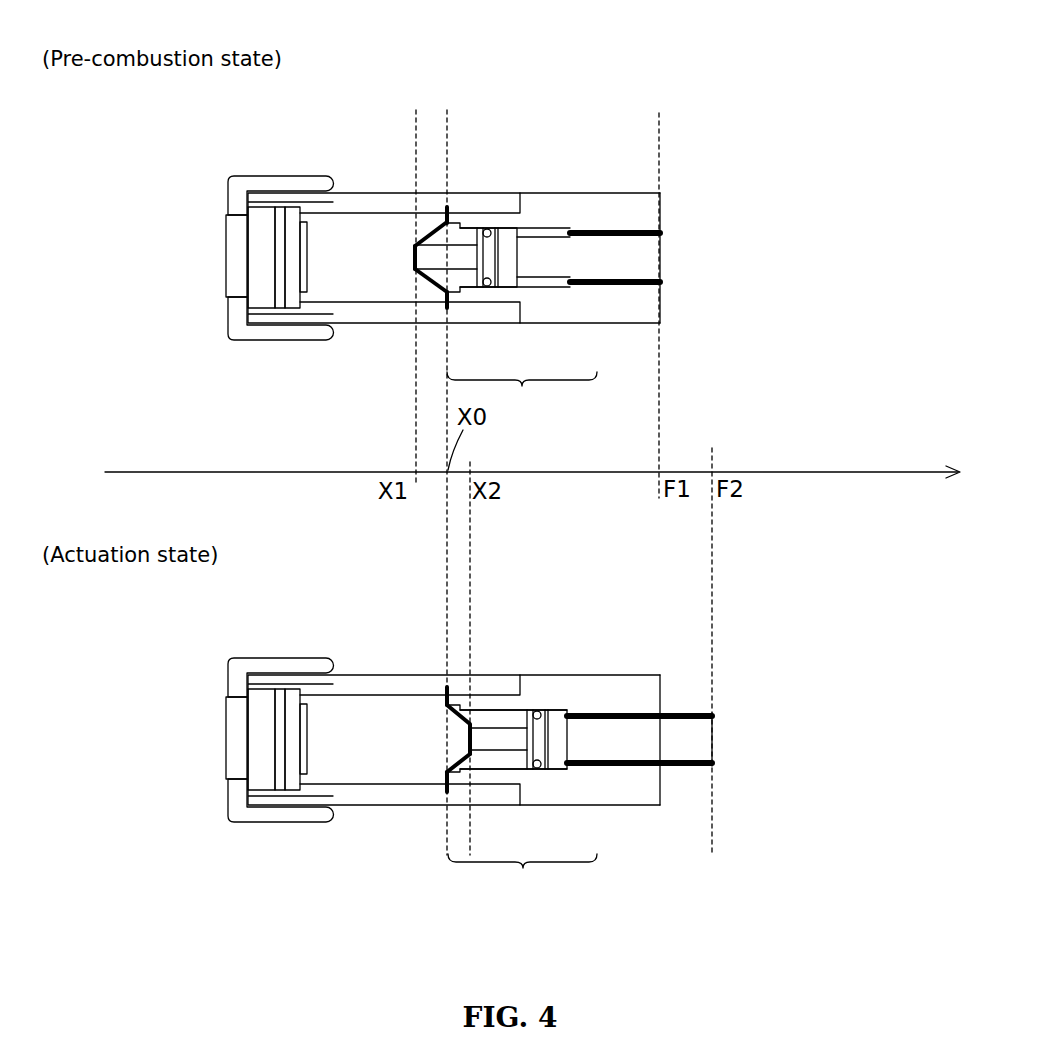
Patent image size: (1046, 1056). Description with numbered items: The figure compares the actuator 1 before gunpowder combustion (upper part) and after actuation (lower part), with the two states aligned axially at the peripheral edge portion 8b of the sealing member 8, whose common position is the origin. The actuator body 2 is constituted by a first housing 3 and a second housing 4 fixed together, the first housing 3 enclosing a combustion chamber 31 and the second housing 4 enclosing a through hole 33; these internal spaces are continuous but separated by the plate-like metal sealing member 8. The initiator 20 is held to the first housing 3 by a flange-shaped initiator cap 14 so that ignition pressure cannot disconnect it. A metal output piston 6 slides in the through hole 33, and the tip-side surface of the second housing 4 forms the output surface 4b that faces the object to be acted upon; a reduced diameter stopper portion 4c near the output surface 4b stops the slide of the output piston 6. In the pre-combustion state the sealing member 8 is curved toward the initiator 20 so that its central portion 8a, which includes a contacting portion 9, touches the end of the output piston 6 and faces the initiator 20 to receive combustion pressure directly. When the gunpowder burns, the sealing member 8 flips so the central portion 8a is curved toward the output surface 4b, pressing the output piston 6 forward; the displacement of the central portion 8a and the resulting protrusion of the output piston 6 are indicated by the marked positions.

The actuator 1 is at (721, 181).
The actuator body 2 is at (522, 634).
The first housing 3 is at (452, 310).
The second housing 4 is at (588, 303).
The output surface 4b is at (660, 292).
The stopper portion 4c is at (571, 232).
The output piston 6 is at (613, 244).
The sealing member 8 is at (446, 207).
The central portion 8a is at (413, 259).
The peripheral edge portion 8b is at (449, 212).
The contacting portion 9 is at (413, 249).
The initiator cap 14 is at (237, 178).
The initiator 20 is at (228, 256).
The combustion chamber 31 is at (363, 227).
The through hole 33 is at (538, 232).